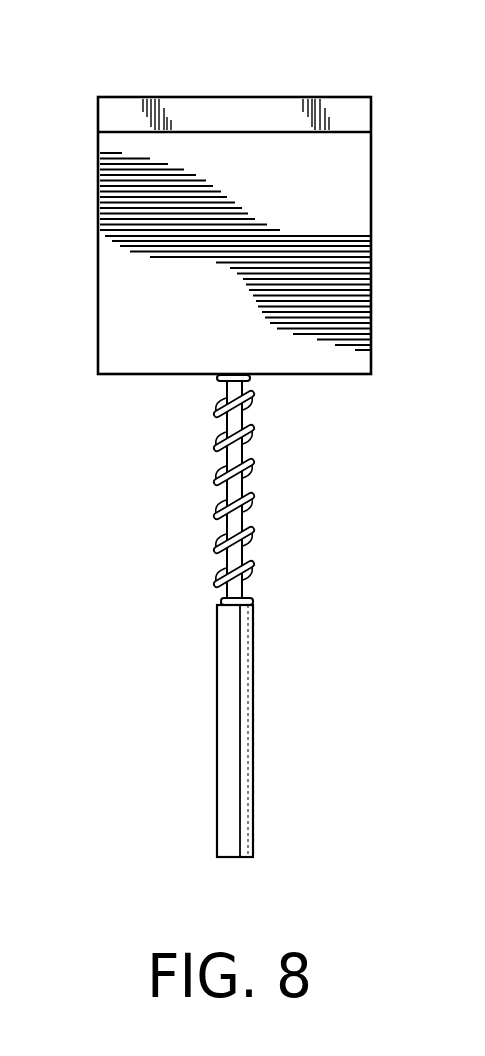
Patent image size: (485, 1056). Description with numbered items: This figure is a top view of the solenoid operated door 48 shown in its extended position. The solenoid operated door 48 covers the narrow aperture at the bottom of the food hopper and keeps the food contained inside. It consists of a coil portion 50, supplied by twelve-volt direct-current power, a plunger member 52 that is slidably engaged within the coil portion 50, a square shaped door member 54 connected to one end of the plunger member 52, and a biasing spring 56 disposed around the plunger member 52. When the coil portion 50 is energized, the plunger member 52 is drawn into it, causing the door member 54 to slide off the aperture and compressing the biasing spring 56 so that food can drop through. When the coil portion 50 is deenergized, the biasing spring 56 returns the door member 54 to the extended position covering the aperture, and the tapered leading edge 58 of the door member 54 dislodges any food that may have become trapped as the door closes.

The solenoid operated door 48 is at (443, 620).
The coil portion 50 is at (227, 753).
The plunger member 52 is at (237, 485).
The door member 54 is at (115, 333).
The biasing spring 56 is at (218, 515).
The tapered leading edge 58 is at (275, 110).